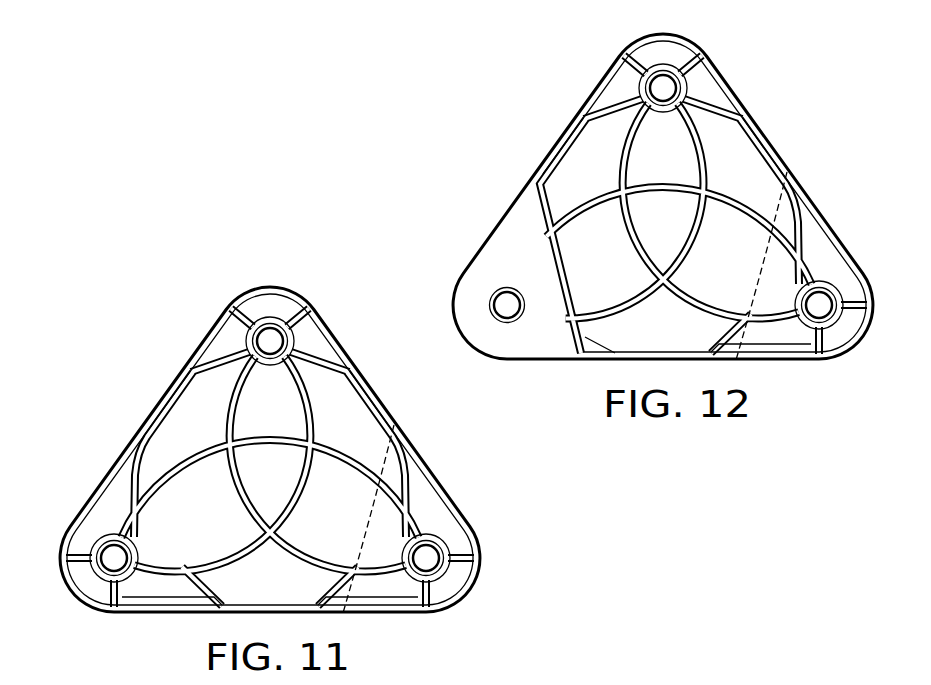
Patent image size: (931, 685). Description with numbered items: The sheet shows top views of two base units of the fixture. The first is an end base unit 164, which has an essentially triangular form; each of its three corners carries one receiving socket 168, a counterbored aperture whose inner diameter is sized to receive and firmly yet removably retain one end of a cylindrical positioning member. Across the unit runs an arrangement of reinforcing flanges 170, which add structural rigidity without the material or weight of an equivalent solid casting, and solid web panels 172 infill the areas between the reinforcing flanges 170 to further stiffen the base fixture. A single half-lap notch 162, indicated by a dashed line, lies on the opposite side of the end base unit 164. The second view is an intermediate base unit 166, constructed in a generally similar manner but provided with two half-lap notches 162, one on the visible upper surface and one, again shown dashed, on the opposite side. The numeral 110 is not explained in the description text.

In FIG. 11, the support plate 110 is at (486, 519).
In FIG. 12, the support plate 110 is at (760, 96).
In FIG. 11, the half-lap notch 162 is at (383, 472).
In FIG. 12, the half-lap notch 162 is at (778, 219).
In FIG. 11, the end base unit 164 is at (306, 456).
In FIG. 12, the intermediate base unit 166 is at (642, 217).
In FIG. 11, the receiving socket 168 is at (264, 336).
In FIG. 12, the receiving socket 168 is at (657, 83).
In FIG. 11, the reinforcing flanges 170 is at (320, 400).
In FIG. 12, the reinforcing flanges 170 is at (713, 147).
In FIG. 11, the solid web panels 172 is at (290, 460).
In FIG. 12, the solid web panels 172 is at (683, 207).